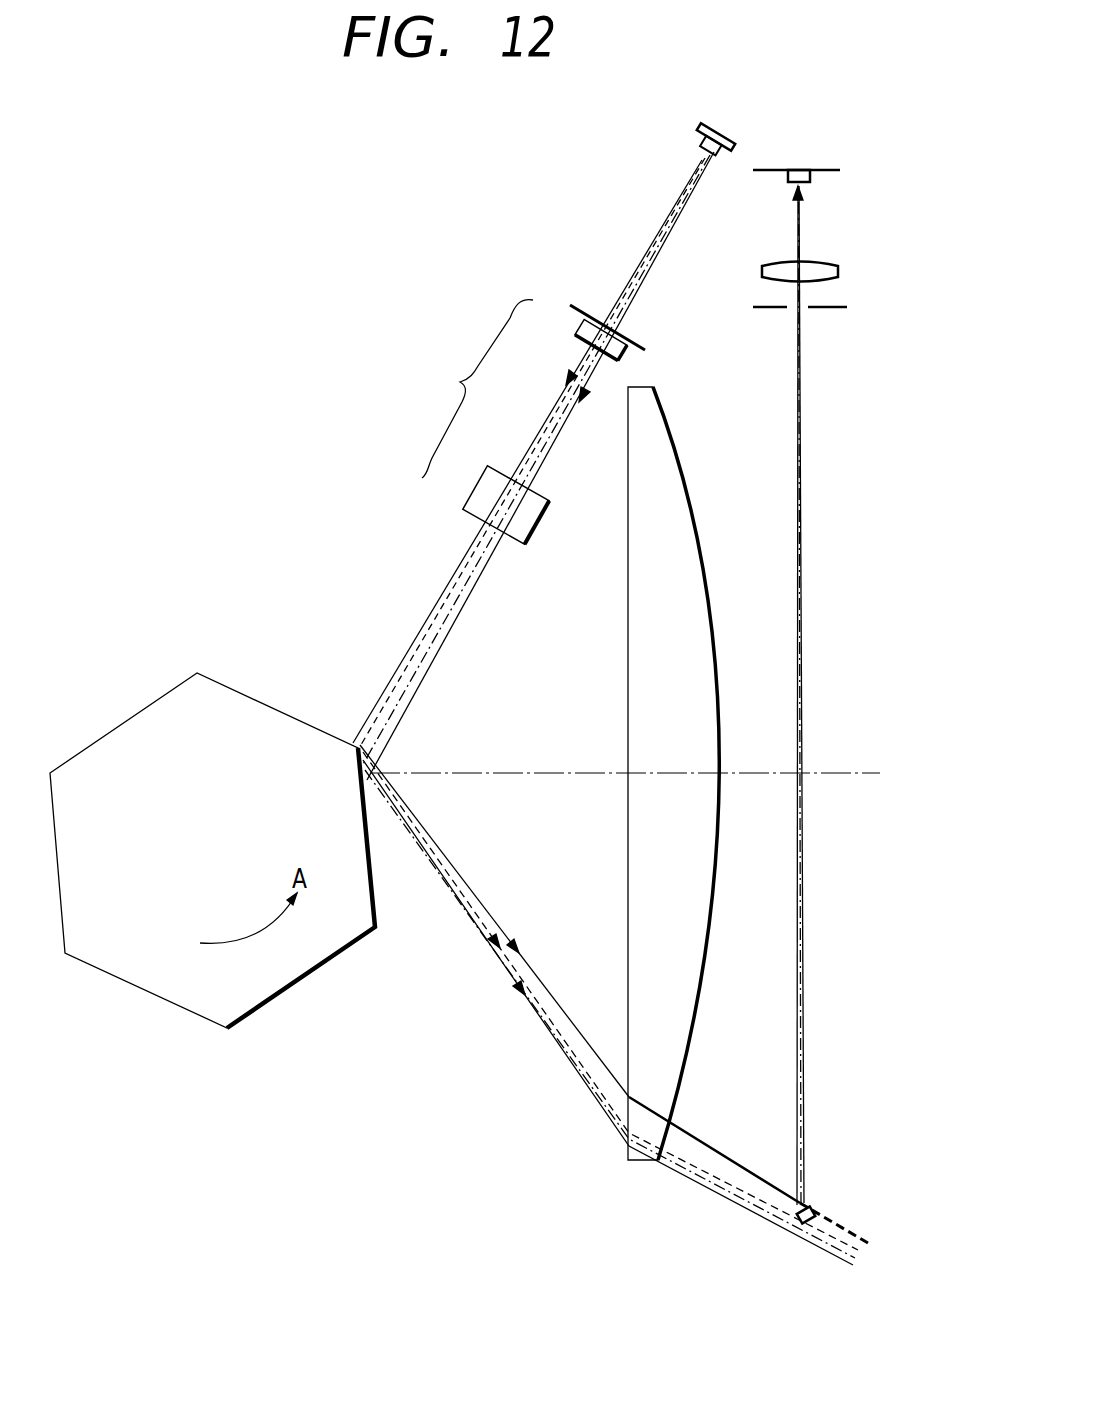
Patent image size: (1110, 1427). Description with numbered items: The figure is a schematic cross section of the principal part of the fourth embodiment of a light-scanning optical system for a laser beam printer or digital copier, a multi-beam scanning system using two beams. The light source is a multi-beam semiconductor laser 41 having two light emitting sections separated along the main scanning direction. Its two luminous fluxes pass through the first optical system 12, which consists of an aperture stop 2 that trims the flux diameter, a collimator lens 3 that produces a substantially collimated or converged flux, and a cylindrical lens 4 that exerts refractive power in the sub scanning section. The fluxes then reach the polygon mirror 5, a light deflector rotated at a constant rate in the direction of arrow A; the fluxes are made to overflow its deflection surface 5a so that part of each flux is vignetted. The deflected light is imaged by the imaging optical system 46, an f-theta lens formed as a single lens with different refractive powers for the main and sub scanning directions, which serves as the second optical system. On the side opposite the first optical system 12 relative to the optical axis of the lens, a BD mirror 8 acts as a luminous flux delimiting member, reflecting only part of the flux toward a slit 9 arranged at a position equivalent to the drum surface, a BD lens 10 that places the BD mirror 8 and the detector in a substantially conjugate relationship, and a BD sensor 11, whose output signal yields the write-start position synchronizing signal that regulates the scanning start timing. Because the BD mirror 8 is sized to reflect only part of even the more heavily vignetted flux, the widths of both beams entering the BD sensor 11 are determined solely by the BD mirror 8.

The multi-beam semiconductor laser 41 is at (702, 128).
The BD sensor 11 is at (830, 170).
The BD lens 10 is at (840, 270).
The slit 9 is at (847, 307).
The aperture stop 2 is at (648, 347).
The collimator lens 3 is at (583, 330).
The cylindrical lens 4 is at (487, 491).
The first optical system 12 is at (477, 389).
The imaging optical system (fθ lens) 46 is at (641, 1162).
The polygon mirror 5 is at (131, 967).
The deflection surface 5a is at (378, 912).
The BD mirror 8 is at (812, 1225).